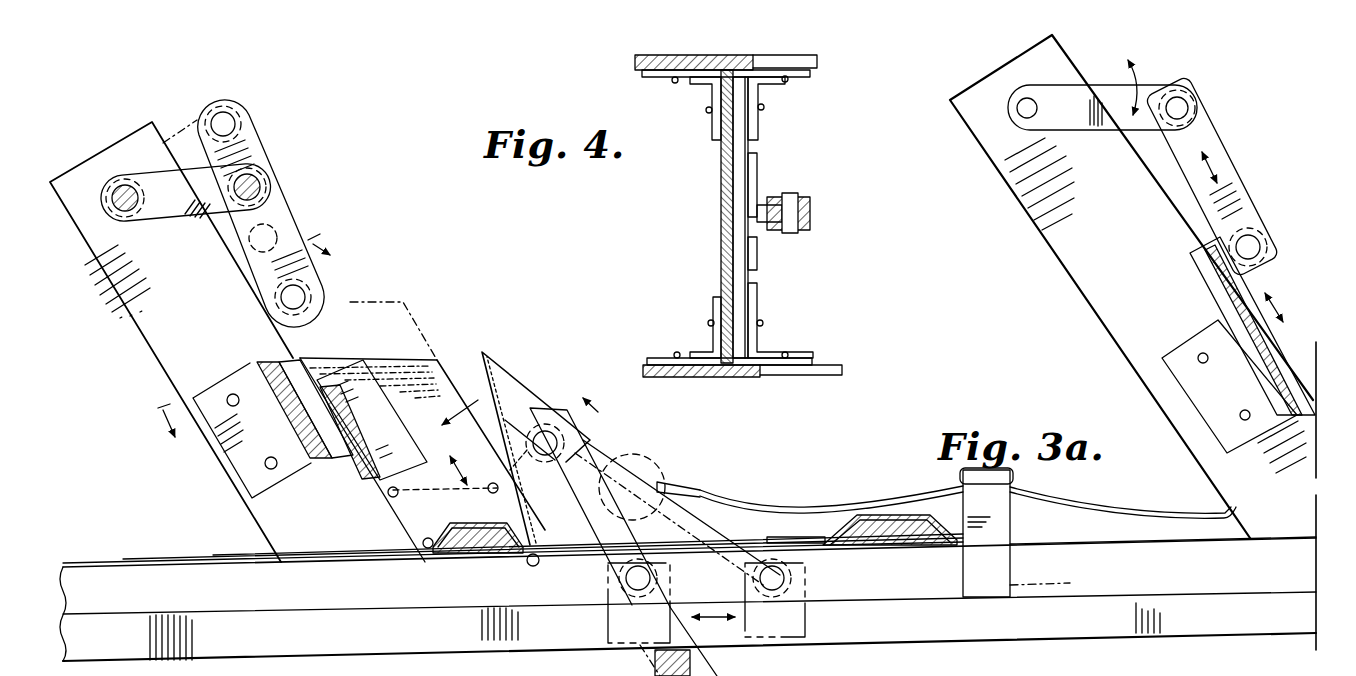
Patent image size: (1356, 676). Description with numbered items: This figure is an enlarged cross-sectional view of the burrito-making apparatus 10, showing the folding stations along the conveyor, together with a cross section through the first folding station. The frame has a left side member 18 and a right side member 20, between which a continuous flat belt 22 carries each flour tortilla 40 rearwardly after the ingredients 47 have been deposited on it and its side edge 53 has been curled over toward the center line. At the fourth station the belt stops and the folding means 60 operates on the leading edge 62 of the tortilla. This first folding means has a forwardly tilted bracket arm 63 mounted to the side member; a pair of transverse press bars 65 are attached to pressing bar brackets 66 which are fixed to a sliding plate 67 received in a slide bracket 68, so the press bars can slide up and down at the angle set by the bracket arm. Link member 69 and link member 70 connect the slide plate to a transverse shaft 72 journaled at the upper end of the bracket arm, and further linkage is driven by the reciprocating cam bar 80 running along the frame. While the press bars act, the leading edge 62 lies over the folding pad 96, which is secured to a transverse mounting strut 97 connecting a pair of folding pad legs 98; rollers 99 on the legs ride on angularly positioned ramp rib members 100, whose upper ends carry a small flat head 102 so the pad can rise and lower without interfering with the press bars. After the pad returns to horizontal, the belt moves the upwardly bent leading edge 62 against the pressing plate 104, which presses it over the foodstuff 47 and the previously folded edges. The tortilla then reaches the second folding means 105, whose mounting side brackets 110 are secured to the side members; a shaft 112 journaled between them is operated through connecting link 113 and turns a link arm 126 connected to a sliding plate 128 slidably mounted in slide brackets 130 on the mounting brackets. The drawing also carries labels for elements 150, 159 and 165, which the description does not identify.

In FIG. 3a, the apparatus for producing a foodstuff product 10 is at (787, 458).
In FIG. 3a, the left side member 18 is at (1120, 645).
In FIG. 3a, the right side member 20 is at (1138, 553).
In FIG. 3a, the continuous flat belt 22 is at (109, 563).
In FIG. 3a, the flour tortilla 40 is at (226, 557).
In FIG. 3a, the ingredients 47 is at (462, 552).
In FIG. 3a, the edge of the tortilla 53 is at (322, 555).
In FIG. 3a, the folding means 60 is at (93, 126).
In FIG. 3a, the leading edge 62 is at (501, 425).
In FIG. 3a, the bracket arm 63 is at (137, 138).
In FIG. 4, the bracket arm 63 is at (635, 63).
In FIG. 3a, the press bars 65 is at (538, 574).
In FIG. 4, the press bars 65 is at (797, 53).
In FIG. 3a, the pressing bar brackets 66 is at (438, 306).
In FIG. 3a, the sliding plate 67 is at (283, 348).
In FIG. 4, the sliding plate 67 is at (738, 132).
In FIG. 3a, the slide bracket 68 is at (256, 366).
In FIG. 4, the slide bracket 68 is at (713, 130).
In FIG. 3a, the link member 69 is at (269, 228).
In FIG. 4, the link member 69 is at (800, 197).
In FIG. 3a, the link member 70 is at (166, 208).
In FIG. 3a, the transverse shaft 72 is at (101, 281).
In FIG. 3a, the cam bar 80 is at (622, 650).
In FIG. 3a, the folding pad 96 is at (524, 377).
In FIG. 3a, the transverse mounting strut 97 is at (580, 441).
In FIG. 3a, the folding pad legs 98 is at (705, 482).
In FIG. 3a, the rollers 99 is at (538, 420).
In FIG. 3a, the ramp rib members 100 is at (652, 449).
In FIG. 3a, the small flat head 102 is at (607, 450).
In FIG. 3a, the pressing plate 104 is at (930, 496).
In FIG. 3a, the second folding means 105 is at (1265, 188).
In FIG. 3a, the mounting side brackets 110 is at (989, 75).
In FIG. 3a, the shaft 112 is at (1020, 112).
In FIG. 3a, the connecting link 113 is at (1148, 85).
In FIG. 3a, the link arm 126 is at (1215, 123).
In FIG. 3a, the sliding plate 128 is at (1292, 333).
In FIG. 3a, the slide brackets 130 is at (1187, 340).
In FIG. 3a, the drive 150 is at (948, 668).
In FIG. 3a, the shaft 159 is at (871, 667).
In FIG. 3a, the cam 165 is at (806, 668).